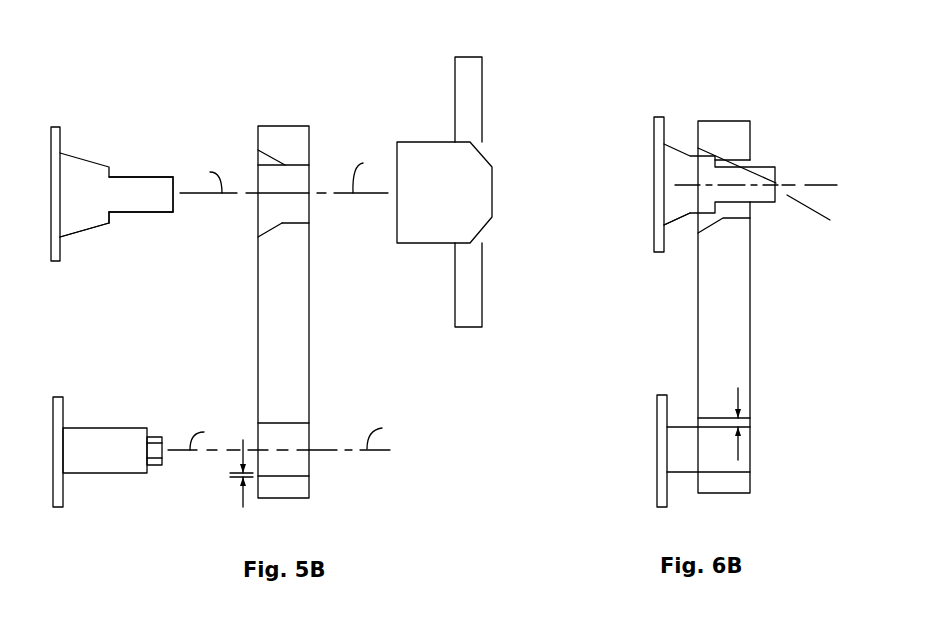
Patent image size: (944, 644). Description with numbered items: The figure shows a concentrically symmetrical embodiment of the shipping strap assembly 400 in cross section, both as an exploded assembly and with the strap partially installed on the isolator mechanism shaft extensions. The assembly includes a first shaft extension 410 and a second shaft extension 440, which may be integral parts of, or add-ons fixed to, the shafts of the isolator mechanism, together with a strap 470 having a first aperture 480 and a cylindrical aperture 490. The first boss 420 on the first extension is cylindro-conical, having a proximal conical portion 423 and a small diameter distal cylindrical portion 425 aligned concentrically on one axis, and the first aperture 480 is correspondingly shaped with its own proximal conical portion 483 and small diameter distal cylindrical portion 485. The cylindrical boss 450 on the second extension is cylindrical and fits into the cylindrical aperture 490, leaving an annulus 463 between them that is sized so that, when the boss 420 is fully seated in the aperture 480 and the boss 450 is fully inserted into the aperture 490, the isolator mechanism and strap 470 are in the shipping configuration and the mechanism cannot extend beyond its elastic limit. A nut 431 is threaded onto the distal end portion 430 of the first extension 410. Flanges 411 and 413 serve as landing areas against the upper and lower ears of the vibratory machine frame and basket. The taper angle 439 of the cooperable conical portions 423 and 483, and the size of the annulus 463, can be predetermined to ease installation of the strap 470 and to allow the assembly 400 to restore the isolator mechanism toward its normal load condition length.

In FIG. 5B, the shipping strap assembly 400 is at (399, 522).
In FIG. 6B, the shipping strap assembly 400 is at (630, 333).
In FIG. 5B, the first shaft extension 410 is at (169, 101).
In FIG. 5B, the flange 411 is at (61, 140).
In FIG. 6B, the flange 411 is at (661, 117).
In FIG. 5B, the flange 413 is at (63, 407).
In FIG. 6B, the flange 413 is at (665, 393).
In FIG. 5B, the first boss 420 is at (88, 172).
In FIG. 6B, the first boss 420 is at (668, 166).
In FIG. 5B, the proximal conical portion 423 is at (72, 232).
In FIG. 6B, the proximal conical portion 423 is at (683, 213).
In FIG. 5B, the small diameter distal cylindrical portion 425 is at (100, 225).
In FIG. 5B, the distal end portion 430 is at (138, 205).
In FIG. 5B, the nut 431 is at (443, 150).
In FIG. 6B, the taper angle 439 is at (798, 228).
In FIG. 5B, the second shaft extension 440 is at (148, 371).
In FIG. 5B, the cylindrical boss 450 is at (107, 428).
In FIG. 6B, the cylindrical boss 450 is at (690, 458).
In FIG. 5B, the annulus 463 is at (241, 500).
In FIG. 6B, the annulus 463 is at (741, 394).
In FIG. 5B, the strap 470 is at (297, 313).
In FIG. 6B, the strap 470 is at (740, 303).
In FIG. 5B, the first aperture 480 is at (283, 172).
In FIG. 6B, the first aperture 480 is at (733, 212).
In FIG. 5B, the proximal conical portion 483 is at (272, 228).
In FIG. 6B, the proximal conical portion 483 is at (720, 160).
In FIG. 5B, the small diameter distal cylindrical portion 485 is at (303, 223).
In FIG. 5B, the cylindrical aperture 490 is at (292, 458).
In FIG. 6B, the cylindrical aperture 490 is at (747, 423).